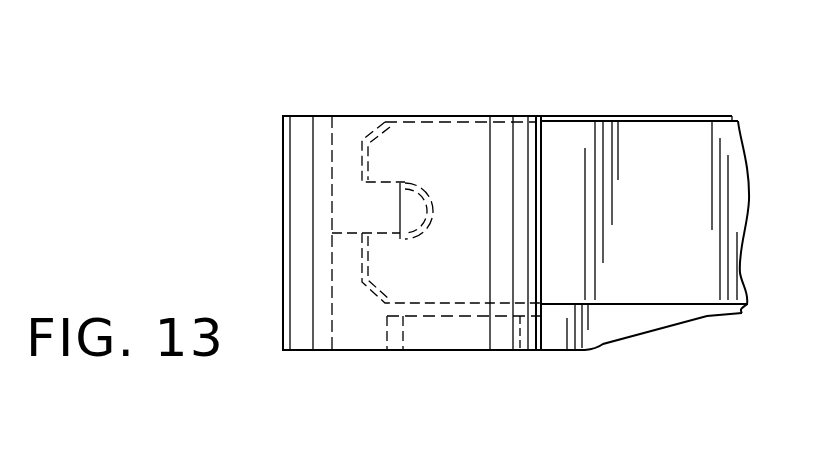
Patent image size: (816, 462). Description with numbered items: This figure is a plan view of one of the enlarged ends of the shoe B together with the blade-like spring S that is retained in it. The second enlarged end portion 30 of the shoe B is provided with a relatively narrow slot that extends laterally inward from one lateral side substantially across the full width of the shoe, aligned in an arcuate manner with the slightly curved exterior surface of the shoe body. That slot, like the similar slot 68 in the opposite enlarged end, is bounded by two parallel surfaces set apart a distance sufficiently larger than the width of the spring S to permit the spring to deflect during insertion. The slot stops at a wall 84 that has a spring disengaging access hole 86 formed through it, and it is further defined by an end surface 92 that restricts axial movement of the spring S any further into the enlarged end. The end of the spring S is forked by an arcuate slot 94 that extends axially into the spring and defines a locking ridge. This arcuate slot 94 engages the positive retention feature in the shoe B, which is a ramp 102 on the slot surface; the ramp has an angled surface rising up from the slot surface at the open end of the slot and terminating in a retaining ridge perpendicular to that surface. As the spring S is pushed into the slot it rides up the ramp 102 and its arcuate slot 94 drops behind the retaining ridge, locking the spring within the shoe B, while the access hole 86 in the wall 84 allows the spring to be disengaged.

The second enlarged end portion 30 is at (272, 107).
The end surface 92 is at (330, 158).
The slot 68 is at (350, 137).
The arcuate slot 94 is at (412, 176).
The ramp 102 is at (350, 207).
The wall 84 is at (458, 333).
The spring disengaging access hole 86 is at (360, 338).
The spring S is at (597, 113).
The shoe B is at (628, 351).